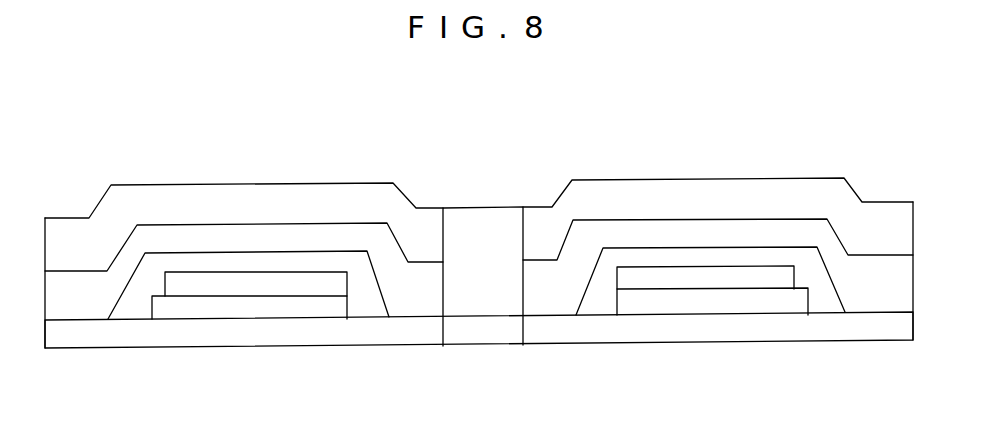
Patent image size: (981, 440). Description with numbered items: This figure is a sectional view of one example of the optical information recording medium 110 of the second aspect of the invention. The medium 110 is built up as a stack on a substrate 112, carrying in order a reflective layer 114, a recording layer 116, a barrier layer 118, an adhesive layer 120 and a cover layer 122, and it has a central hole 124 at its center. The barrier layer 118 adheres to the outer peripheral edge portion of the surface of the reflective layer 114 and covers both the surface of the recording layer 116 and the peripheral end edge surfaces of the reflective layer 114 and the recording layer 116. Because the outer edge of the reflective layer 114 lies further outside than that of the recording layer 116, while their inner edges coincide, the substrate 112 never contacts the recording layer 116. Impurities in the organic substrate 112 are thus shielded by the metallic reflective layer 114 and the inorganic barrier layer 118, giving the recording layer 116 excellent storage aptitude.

The optical information recording medium 110 is at (868, 68).
The substrate 112 is at (130, 337).
The reflective layer 114 is at (185, 307).
The recording layer 116 is at (243, 283).
The barrier layer 118 is at (305, 260).
The adhesive layer 120 is at (75, 305).
The cover layer 122 is at (340, 207).
The central hole 124 is at (447, 228).